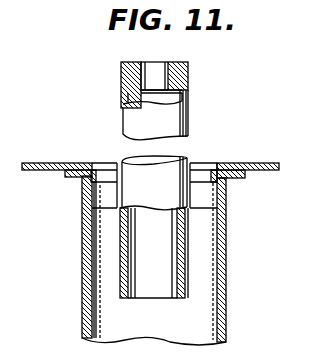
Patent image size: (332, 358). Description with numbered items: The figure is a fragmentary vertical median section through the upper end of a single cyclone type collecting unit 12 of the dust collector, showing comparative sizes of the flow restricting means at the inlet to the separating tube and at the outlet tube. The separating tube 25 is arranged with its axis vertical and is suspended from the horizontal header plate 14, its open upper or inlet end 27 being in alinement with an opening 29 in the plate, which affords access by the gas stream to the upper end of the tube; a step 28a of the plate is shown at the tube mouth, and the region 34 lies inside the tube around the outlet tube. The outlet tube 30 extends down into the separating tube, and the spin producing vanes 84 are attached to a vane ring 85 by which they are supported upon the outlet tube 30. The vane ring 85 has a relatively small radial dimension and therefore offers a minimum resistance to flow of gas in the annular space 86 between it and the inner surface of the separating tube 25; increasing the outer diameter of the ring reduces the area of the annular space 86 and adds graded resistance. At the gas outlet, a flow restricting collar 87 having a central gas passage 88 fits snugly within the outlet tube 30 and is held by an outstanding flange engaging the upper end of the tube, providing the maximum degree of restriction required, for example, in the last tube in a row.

The collecting unit 12 is at (80, 318).
The header plate 14 is at (268, 165).
The separating tube 25 is at (226, 307).
The upper or inlet end 27 is at (222, 200).
The plate step 28a is at (247, 182).
The opening 29 is at (219, 165).
The outlet tube 30 is at (150, 298).
The annular chamber 34 is at (103, 191).
The vanes 84 is at (205, 211).
The vane ring 85 is at (100, 211).
The annular space 86 is at (89, 238).
The flow restricting collar 87 is at (183, 62).
The gas passage 88 is at (150, 62).